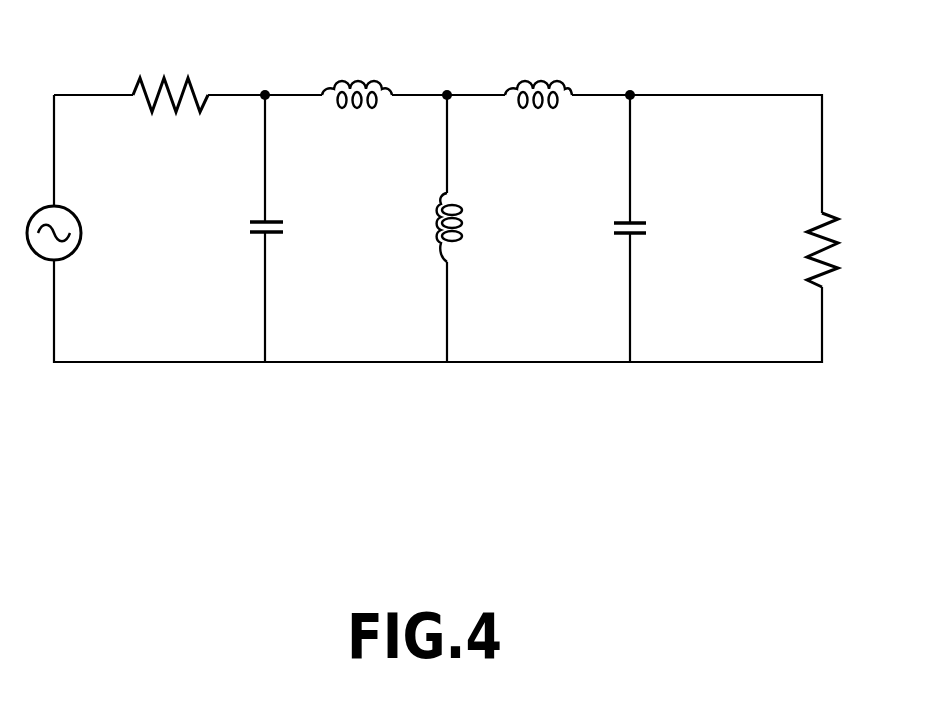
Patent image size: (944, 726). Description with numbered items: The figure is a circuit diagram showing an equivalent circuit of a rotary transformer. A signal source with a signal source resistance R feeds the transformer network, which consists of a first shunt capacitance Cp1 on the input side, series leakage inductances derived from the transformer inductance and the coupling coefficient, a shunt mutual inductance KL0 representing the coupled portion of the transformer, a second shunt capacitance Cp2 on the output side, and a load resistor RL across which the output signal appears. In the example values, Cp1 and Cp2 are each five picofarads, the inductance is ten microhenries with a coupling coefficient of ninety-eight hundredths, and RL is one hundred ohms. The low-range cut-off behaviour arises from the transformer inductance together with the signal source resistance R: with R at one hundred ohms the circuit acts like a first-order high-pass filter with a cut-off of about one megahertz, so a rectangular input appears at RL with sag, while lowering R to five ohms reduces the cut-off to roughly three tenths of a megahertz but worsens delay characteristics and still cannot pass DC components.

The signal source resistance R is at (170, 78).
The capacitance Cp1 is at (242, 250).
The capacitance Cp2 is at (606, 250).
The mutual inductance kL0 KL0 is at (417, 227).
The load resistor RL is at (845, 250).